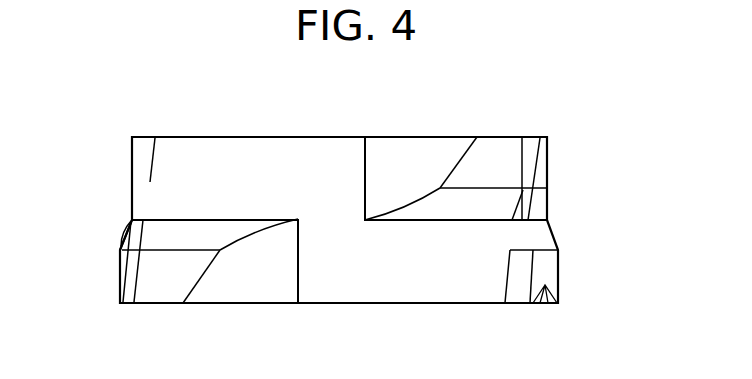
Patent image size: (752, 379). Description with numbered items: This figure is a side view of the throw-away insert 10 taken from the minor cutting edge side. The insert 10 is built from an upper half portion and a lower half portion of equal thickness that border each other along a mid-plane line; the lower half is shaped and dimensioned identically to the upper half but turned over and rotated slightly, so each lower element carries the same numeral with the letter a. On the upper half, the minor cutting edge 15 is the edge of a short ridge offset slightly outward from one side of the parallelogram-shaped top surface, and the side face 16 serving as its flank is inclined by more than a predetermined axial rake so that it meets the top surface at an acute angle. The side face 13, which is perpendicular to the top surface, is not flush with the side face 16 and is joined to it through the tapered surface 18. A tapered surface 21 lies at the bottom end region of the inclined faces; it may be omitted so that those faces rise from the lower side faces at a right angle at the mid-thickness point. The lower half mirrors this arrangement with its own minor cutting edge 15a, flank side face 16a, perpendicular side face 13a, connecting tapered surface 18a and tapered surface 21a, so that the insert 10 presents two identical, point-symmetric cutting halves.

The throw-away insert 10 is at (569, 153).
The side face 13 is at (222, 160).
The side face 13a is at (437, 278).
The minor cutting edge 15 is at (495, 136).
The minor cutting edge 15a is at (165, 301).
The side face 16 is at (505, 158).
The side face 16a is at (157, 280).
The tapered surface 18 is at (403, 157).
The tapered surface 18a is at (271, 287).
The tapered surface 21 is at (503, 203).
The tapered surface 21a is at (160, 232).